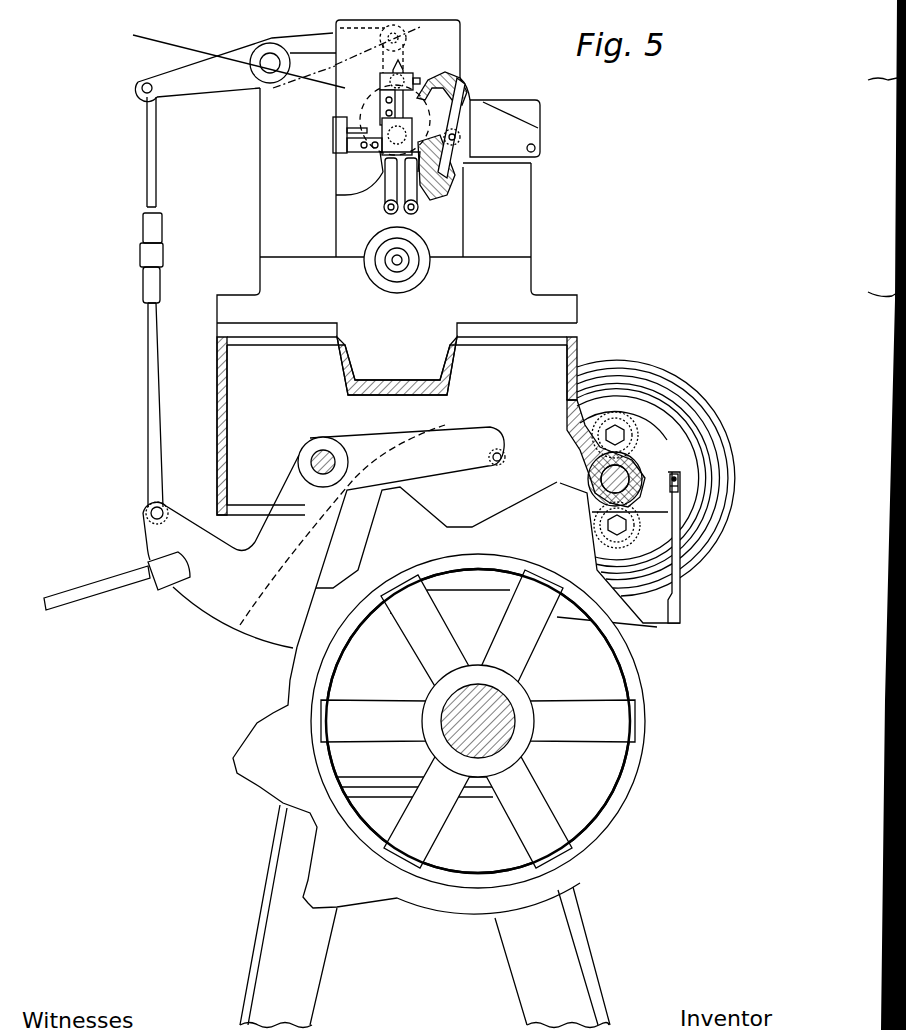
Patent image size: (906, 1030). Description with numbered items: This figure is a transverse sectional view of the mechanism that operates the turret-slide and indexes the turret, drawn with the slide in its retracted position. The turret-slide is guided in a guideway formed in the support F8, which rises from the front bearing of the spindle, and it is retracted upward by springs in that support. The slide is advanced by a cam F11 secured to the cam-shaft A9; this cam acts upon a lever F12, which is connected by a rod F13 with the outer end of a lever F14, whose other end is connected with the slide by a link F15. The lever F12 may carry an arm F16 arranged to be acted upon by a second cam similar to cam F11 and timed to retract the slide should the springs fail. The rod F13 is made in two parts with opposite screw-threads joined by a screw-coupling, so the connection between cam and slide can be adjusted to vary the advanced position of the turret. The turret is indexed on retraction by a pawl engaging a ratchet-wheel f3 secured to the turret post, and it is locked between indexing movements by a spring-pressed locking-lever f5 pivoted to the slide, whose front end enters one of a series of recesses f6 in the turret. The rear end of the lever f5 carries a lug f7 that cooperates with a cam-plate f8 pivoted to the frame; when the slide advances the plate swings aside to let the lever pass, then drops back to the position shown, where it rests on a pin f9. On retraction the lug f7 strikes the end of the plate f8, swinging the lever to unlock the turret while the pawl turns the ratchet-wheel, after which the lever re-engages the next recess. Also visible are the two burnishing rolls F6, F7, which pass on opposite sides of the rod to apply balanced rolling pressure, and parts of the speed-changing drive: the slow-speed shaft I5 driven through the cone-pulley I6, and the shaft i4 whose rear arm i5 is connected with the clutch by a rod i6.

The lever F14 is at (197, 67).
The link F15 is at (398, 55).
The arm F16 is at (157, 277).
The rod F13 is at (155, 355).
The lever F12 is at (205, 602).
The cam F11 is at (293, 712).
The support F8 is at (338, 207).
The burnishing roll F6 is at (383, 207).
The burnishing roll F7 is at (418, 207).
The ratchet-wheel f3 is at (375, 125).
The locking-lever f5 is at (443, 165).
The recess f6 is at (435, 178).
The lug f7 is at (463, 100).
The cam-plate f8 is at (508, 123).
The pin f9 is at (535, 148).
The cam-shaft A9 is at (487, 702).
The shaft I5 is at (632, 468).
The cone-pulley I6 is at (707, 428).
The shaft i4 is at (682, 600).
The arm i5 is at (673, 500).
The rod i6 is at (672, 470).